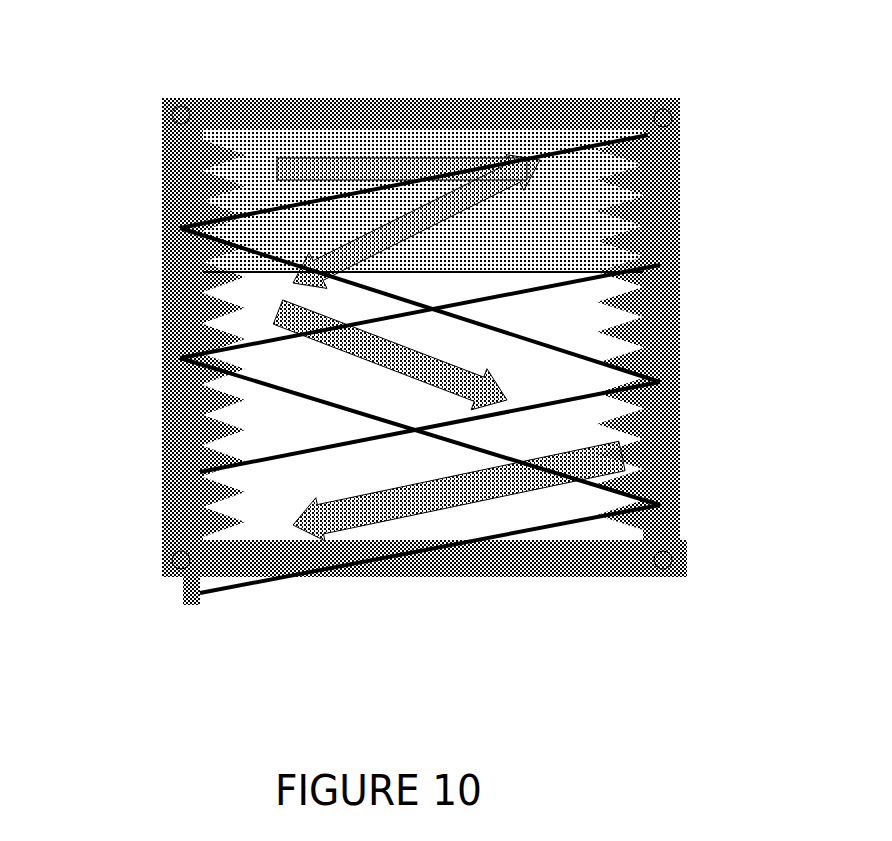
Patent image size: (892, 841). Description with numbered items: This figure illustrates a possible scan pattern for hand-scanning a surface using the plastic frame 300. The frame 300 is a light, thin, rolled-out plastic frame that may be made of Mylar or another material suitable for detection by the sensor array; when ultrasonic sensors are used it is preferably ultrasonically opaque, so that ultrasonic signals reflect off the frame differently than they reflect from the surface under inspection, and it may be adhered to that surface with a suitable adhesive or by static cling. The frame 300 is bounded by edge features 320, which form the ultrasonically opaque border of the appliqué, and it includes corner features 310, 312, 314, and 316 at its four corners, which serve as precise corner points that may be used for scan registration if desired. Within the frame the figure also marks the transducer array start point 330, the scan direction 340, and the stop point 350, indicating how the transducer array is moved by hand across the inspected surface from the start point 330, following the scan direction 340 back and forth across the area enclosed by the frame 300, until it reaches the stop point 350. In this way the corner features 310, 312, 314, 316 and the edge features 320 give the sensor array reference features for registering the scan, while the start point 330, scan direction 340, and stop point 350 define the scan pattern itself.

The frame 300 is at (410, 329).
The corner feature 310 is at (160, 108).
The corner feature 312 is at (669, 122).
The corner feature 314 is at (684, 558).
The corner feature 316 is at (166, 572).
The edge feature 320 is at (682, 297).
The transducer array start point 330 is at (162, 182).
The scan direction 340 is at (162, 320).
The stop point 350 is at (162, 540).